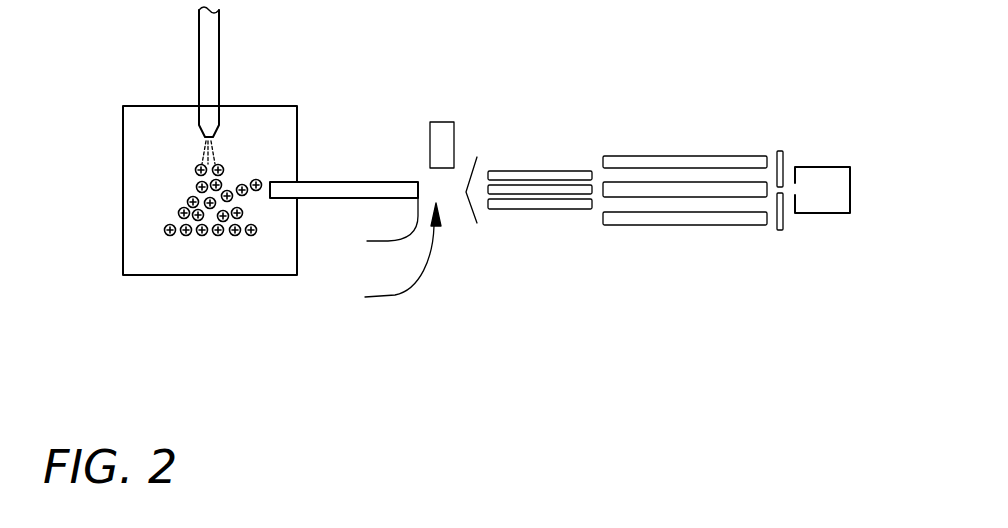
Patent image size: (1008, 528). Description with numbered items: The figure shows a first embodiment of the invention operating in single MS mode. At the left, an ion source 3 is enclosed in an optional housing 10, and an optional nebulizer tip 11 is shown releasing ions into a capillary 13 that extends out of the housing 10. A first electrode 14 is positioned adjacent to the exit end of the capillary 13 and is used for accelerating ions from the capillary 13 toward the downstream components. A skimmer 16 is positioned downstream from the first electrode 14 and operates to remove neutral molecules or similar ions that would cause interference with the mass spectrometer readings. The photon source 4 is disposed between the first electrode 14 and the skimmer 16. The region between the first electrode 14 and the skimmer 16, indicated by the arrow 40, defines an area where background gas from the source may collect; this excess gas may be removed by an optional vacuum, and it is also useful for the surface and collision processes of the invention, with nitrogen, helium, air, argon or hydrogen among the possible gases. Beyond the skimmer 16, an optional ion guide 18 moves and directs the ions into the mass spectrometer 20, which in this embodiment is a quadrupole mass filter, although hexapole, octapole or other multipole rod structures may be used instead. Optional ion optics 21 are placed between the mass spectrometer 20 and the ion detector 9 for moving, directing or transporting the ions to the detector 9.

The ion source 3 is at (147, 167).
The photon source 4 is at (443, 122).
The ion detector 9 is at (838, 167).
The housing 10 is at (209, 275).
The nebulizer tip 11 is at (199, 33).
The capillary 13 is at (345, 182).
The first electrode 14 is at (370, 230).
The skimmer 16 is at (467, 208).
The ion guide 18 is at (541, 171).
The mass spectrometer 20 is at (686, 156).
The ion optics 21 is at (781, 151).
The region between the first electrode and the skimmer 40 is at (381, 260).